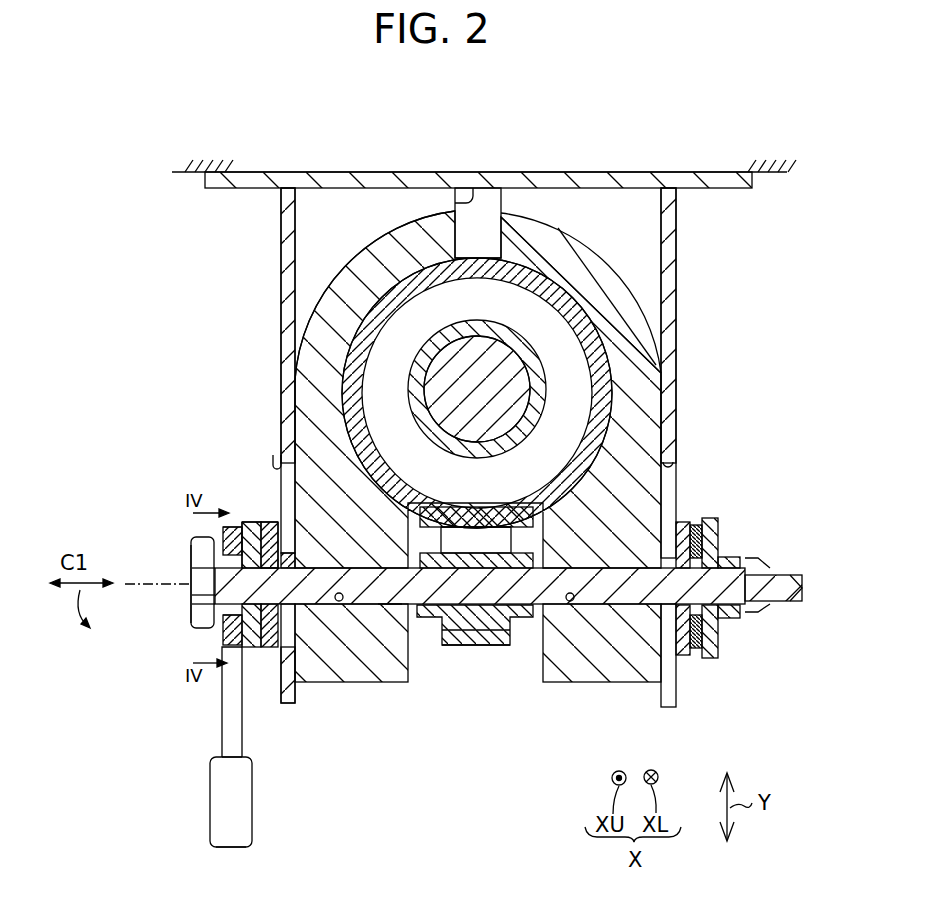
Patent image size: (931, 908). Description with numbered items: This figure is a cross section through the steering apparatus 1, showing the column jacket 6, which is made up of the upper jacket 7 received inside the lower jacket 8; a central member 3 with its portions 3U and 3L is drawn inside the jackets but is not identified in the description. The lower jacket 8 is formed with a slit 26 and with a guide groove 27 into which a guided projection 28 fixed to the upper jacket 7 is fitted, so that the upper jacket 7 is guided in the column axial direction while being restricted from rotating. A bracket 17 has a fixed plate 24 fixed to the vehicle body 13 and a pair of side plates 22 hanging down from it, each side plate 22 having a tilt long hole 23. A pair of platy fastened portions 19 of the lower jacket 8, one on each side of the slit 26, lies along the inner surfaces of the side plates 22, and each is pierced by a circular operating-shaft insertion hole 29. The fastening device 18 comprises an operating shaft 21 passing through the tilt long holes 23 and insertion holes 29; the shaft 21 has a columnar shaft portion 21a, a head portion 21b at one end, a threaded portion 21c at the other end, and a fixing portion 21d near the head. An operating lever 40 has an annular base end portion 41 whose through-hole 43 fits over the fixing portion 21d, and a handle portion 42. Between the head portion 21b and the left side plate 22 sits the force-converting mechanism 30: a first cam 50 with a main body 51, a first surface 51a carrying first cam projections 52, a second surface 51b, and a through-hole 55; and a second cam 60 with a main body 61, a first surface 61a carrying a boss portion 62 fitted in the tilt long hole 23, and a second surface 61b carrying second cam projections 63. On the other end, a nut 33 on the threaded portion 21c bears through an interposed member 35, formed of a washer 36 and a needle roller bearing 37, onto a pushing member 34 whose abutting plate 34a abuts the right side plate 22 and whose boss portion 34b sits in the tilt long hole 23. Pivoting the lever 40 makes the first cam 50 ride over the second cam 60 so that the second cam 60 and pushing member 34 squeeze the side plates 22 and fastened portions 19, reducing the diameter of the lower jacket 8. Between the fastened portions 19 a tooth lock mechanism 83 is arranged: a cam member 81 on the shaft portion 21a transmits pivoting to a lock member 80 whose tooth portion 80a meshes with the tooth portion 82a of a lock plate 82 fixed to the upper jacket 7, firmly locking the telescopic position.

The steering apparatus 1 is at (699, 141).
The rotating member 3 is at (741, 330).
The upper member 3U is at (522, 349).
The lower member 3L is at (512, 372).
The column jacket 6 is at (728, 236).
The upper jacket 7 is at (578, 300).
The lower jacket 8 is at (580, 263).
The vehicle body 13 is at (203, 166).
The bracket 17 is at (628, 167).
The fastening device 18 is at (182, 617).
The fastened portions 19 is at (310, 690).
The operating shaft 21 is at (191, 542).
The shaft portion 21a is at (390, 612).
The head portion 21b is at (190, 538).
The threaded portion 21c is at (750, 567).
The fixing portion 21d is at (190, 560).
The side plates 22 is at (283, 259).
The tilt long hole 23 is at (277, 458).
The fixed plate 24 is at (568, 183).
The slit 26 is at (538, 684).
The guide groove 27 is at (463, 214).
The guided projection 28 is at (487, 205).
The operating-shaft insertion hole 29 is at (348, 648).
The force-converting mechanism 30 is at (160, 695).
The nut 33 is at (740, 619).
The pushing member 34 is at (685, 655).
The abutting plate 34a is at (688, 524).
The boss portion 34b is at (662, 564).
The interposed member 35 is at (770, 707).
The washer 36 is at (730, 640).
The needle roller bearing 37 is at (696, 648).
The operating lever 40 is at (211, 800).
The base end portion 41 is at (232, 640).
The handle portion 42 is at (231, 838).
The through-hole 43 is at (190, 599).
The first cam 50 is at (228, 680).
The main body 51 is at (228, 655).
The first surface 51a is at (232, 530).
The second surface 51b is at (218, 532).
The first cam projections 52 is at (255, 520).
The through-hole 55 is at (190, 566).
The second cam 60 is at (230, 692).
The main body 61 is at (258, 652).
The first surface 61a is at (292, 530).
The second surface 61b is at (268, 520).
The boss portion 62 is at (290, 563).
The second cam projections 63 is at (258, 522).
The lock member 80 is at (493, 640).
The tooth portion 80a is at (498, 518).
The cam member 81 is at (463, 622).
The lock plate 82 is at (478, 520).
The tooth portion 82a is at (452, 515).
The tooth lock mechanism 83 is at (478, 689).